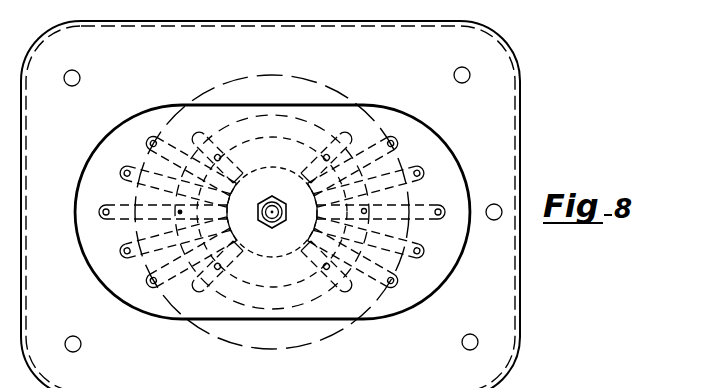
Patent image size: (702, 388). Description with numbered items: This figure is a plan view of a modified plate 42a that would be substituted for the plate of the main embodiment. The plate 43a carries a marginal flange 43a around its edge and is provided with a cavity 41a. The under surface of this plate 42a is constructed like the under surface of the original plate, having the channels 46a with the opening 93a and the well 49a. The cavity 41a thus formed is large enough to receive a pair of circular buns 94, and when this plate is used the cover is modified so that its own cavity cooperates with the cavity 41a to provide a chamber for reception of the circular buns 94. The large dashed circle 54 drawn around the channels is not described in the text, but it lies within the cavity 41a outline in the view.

The dashed circle (mounting ring) 54 is at (316, 83).
The circular buns 94 is at (246, 121).
The channels 46a is at (419, 177).
The opening 93a is at (437, 215).
The well 49a is at (269, 313).
The cavity 41a is at (440, 283).
The plate 42a is at (402, 292).
The marginal flange 43a is at (497, 349).